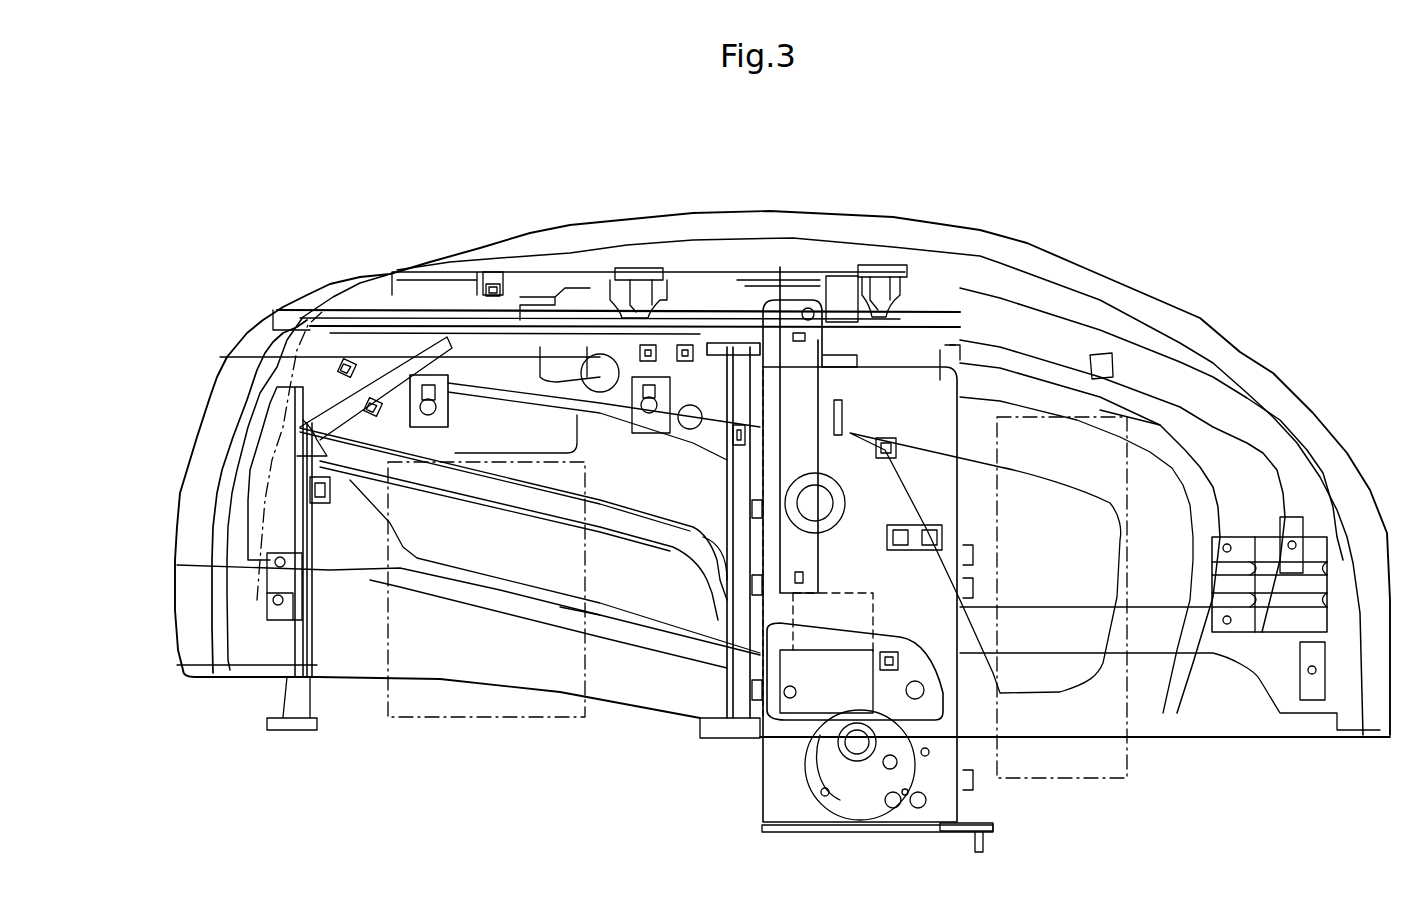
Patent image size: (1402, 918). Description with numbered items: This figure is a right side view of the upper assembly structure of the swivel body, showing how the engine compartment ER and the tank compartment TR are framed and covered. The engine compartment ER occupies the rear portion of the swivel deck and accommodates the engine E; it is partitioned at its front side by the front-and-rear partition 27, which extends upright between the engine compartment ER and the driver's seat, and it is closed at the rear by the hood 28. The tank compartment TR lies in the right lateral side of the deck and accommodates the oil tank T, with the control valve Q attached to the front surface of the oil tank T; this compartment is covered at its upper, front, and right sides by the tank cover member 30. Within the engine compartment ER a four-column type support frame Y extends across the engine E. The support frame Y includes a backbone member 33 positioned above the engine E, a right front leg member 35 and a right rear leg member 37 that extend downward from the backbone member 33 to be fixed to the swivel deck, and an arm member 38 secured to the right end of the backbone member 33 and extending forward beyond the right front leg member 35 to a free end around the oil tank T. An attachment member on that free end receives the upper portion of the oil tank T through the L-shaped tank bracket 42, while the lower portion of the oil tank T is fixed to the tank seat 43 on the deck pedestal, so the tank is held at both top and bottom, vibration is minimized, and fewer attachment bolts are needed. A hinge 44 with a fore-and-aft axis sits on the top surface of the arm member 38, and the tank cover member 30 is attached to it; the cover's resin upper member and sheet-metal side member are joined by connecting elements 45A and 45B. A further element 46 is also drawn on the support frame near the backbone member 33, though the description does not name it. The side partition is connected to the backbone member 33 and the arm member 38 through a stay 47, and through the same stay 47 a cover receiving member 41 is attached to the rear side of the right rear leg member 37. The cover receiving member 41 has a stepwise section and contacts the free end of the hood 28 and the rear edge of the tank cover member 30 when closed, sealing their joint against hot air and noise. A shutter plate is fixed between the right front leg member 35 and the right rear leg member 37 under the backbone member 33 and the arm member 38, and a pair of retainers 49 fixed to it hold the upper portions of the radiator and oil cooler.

The front-and-rear partition 27 is at (670, 493).
The hood 28 is at (221, 384).
The tank cover member 30 is at (1278, 371).
The backbone member 33 is at (478, 290).
The right front leg member 35 is at (727, 707).
The right rear leg member 37 is at (310, 697).
The arm member 38 is at (712, 300).
The cover receiving member 41 is at (250, 647).
The tank bracket 42 is at (740, 330).
The tank seat 43 is at (1000, 827).
The hinge 44 is at (932, 258).
The connecting element 45A is at (787, 295).
The connecting element 45B is at (1262, 632).
The upper plate 46 is at (505, 268).
The stay 47 is at (267, 613).
The retainer 49 is at (443, 403).
The support frame Y is at (455, 295).
The oil tank T is at (960, 360).
The control valve Q is at (1075, 405).
The tank compartment TR is at (1155, 420).
The engine E is at (430, 722).
The engine compartment ER is at (627, 685).